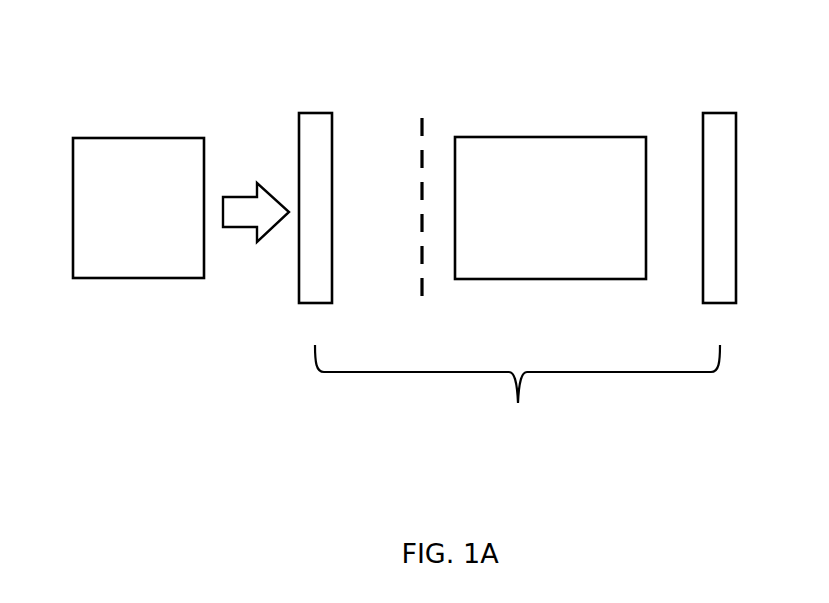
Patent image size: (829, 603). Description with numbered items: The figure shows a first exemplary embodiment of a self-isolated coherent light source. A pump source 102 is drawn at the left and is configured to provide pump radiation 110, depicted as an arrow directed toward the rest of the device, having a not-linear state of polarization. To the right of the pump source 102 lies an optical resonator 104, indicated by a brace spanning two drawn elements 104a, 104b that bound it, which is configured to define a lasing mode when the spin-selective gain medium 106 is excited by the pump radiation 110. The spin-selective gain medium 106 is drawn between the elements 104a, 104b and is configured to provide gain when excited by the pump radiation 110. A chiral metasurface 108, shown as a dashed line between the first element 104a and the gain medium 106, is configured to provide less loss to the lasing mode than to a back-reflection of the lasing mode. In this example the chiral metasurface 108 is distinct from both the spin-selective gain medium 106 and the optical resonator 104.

The pump source 102 is at (162, 222).
The optical resonator 104 is at (517, 399).
The first optical element 104a is at (316, 128).
The second optical element 104b is at (720, 128).
The spin-selective gain medium 106 is at (572, 224).
The chiral metasurface 108 is at (423, 120).
The pump radiation 110 is at (235, 210).